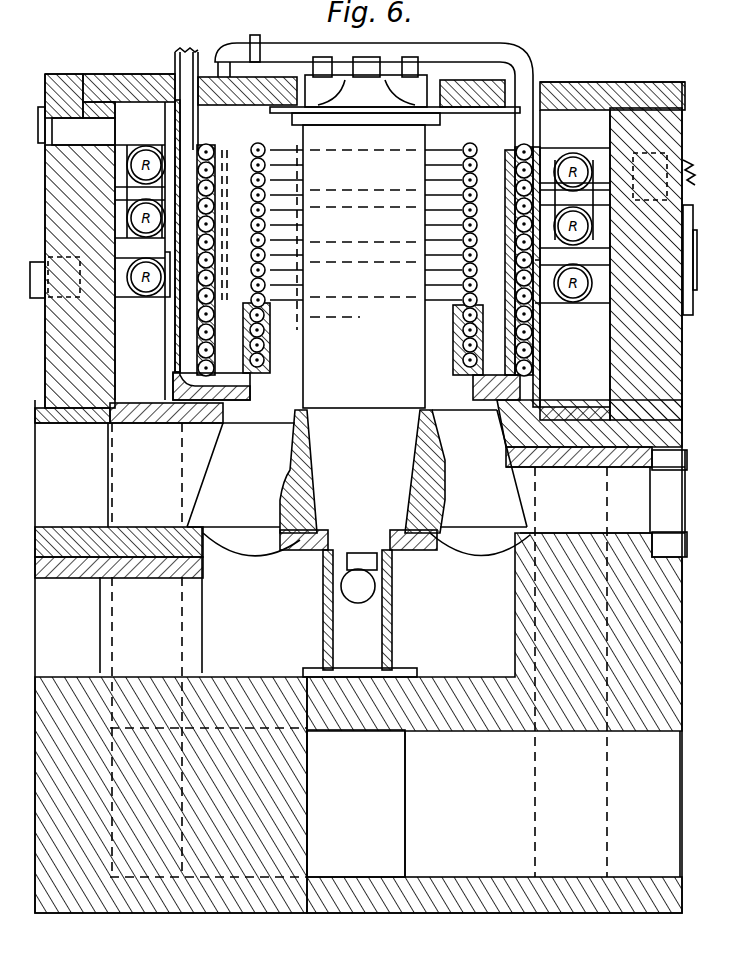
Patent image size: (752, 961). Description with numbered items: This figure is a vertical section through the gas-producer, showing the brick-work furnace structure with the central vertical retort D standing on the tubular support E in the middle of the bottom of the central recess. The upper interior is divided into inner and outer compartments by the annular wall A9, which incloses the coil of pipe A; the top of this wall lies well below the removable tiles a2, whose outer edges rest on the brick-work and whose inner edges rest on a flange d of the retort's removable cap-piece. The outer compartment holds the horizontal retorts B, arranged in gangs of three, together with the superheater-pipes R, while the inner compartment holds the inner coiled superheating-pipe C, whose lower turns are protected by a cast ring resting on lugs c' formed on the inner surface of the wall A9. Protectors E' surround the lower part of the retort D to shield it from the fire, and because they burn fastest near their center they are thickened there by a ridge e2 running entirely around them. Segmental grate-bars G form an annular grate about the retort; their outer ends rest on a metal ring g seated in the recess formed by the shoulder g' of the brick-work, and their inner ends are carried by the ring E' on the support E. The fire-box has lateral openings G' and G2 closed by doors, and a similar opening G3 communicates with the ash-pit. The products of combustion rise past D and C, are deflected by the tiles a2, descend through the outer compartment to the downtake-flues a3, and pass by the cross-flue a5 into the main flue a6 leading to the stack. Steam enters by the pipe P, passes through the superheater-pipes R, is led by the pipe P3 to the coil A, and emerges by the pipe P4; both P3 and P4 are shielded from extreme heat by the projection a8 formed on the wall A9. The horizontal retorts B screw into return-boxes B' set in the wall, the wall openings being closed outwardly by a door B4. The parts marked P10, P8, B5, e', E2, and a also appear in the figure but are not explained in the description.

The removable tiles a2 is at (128, 85).
The projection a8 is at (105, 97).
The return-boxes B' is at (363, 264).
The coil of pipe A is at (195, 152).
The superheater-pipes R is at (359, 224).
The pipe P4 is at (211, 208).
The horizontal retorts B is at (368, 275).
The inner coiled superheating-pipe C is at (262, 150).
The lugs c' is at (346, 387).
The pipe P is at (374, 78).
The pipe P3 is at (530, 202).
The pipe fitting P10 is at (437, 68).
The cross-flue a5 is at (446, 465).
The flange d is at (466, 324).
The vertical retort D is at (362, 329).
The pipe connection P8 is at (704, 169).
The side plate B5 is at (693, 208).
The door B4 is at (697, 252).
The annular wall A9 is at (558, 353).
The protectors E' is at (357, 468).
The ridge e2 is at (452, 440).
The lateral opening G' is at (129, 475).
The downtake-flues a3 is at (359, 650).
The metal ring g is at (361, 512).
The grate-bars G is at (366, 541).
The shoulder g' is at (351, 600).
The outlet e' is at (357, 562).
The outlet tube E2 is at (318, 582).
The tubular support E is at (361, 596).
The lateral opening G2 is at (591, 478).
The opening G3 is at (74, 625).
The main flue a6 is at (361, 722).
The passage a is at (252, 292).